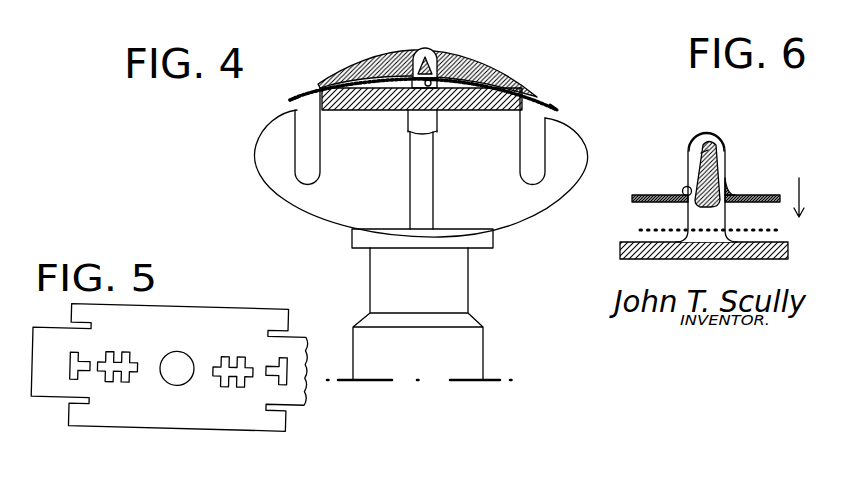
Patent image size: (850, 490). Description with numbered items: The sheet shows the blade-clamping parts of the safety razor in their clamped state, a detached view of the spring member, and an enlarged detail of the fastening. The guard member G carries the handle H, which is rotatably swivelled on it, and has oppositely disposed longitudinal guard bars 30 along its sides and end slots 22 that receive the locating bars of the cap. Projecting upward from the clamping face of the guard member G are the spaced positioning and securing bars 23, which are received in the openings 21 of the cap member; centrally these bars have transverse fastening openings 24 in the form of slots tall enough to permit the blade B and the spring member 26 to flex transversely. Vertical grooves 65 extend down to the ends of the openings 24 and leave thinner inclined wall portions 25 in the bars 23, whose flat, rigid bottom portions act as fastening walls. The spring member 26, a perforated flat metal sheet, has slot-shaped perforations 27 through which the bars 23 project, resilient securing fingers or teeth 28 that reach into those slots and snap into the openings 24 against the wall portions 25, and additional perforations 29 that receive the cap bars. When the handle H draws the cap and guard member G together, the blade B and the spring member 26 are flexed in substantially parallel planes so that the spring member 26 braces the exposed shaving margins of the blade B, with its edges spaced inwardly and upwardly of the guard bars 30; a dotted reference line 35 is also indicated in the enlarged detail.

In FIG. 4, the openings 21 is at (438, 131).
In FIG. 4, the slots 22 is at (438, 50).
In FIG. 4, the blade-positioning and spring member-positioning and securing bars 23 is at (434, 49).
In FIG. 6, the blade-positioning and spring member-positioning and securing bars 23 is at (722, 133).
In FIG. 4, the fastening openings 24 is at (463, 58).
In FIG. 6, the fastening openings 24 is at (700, 217).
In FIG. 4, the inclined wall portions 25 is at (421, 57).
In FIG. 6, the inclined wall portions 25 is at (702, 153).
In FIG. 4, the spring member 26 is at (296, 104).
In FIG. 5, the spring member 26 is at (306, 407).
In FIG. 6, the spring member 26 is at (758, 198).
In FIG. 5, the perforations 27 is at (135, 358).
In FIG. 4, the securing fingers or teeth 28 is at (403, 107).
In FIG. 5, the securing fingers or teeth 28 is at (233, 367).
In FIG. 6, the securing fingers or teeth 28 is at (684, 188).
In FIG. 5, the perforations 29 is at (71, 372).
In FIG. 4, the guard bars 30 is at (267, 129).
In FIG. 6, the blade plane 35 is at (636, 229).
In FIG. 6, the vertical grooves 65 is at (718, 154).
In FIG. 4, the razor blade B is at (291, 98).
In FIG. 4, the guard member G is at (537, 220).
In FIG. 6, the guard member G is at (620, 250).
In FIG. 4, the handle H is at (468, 291).